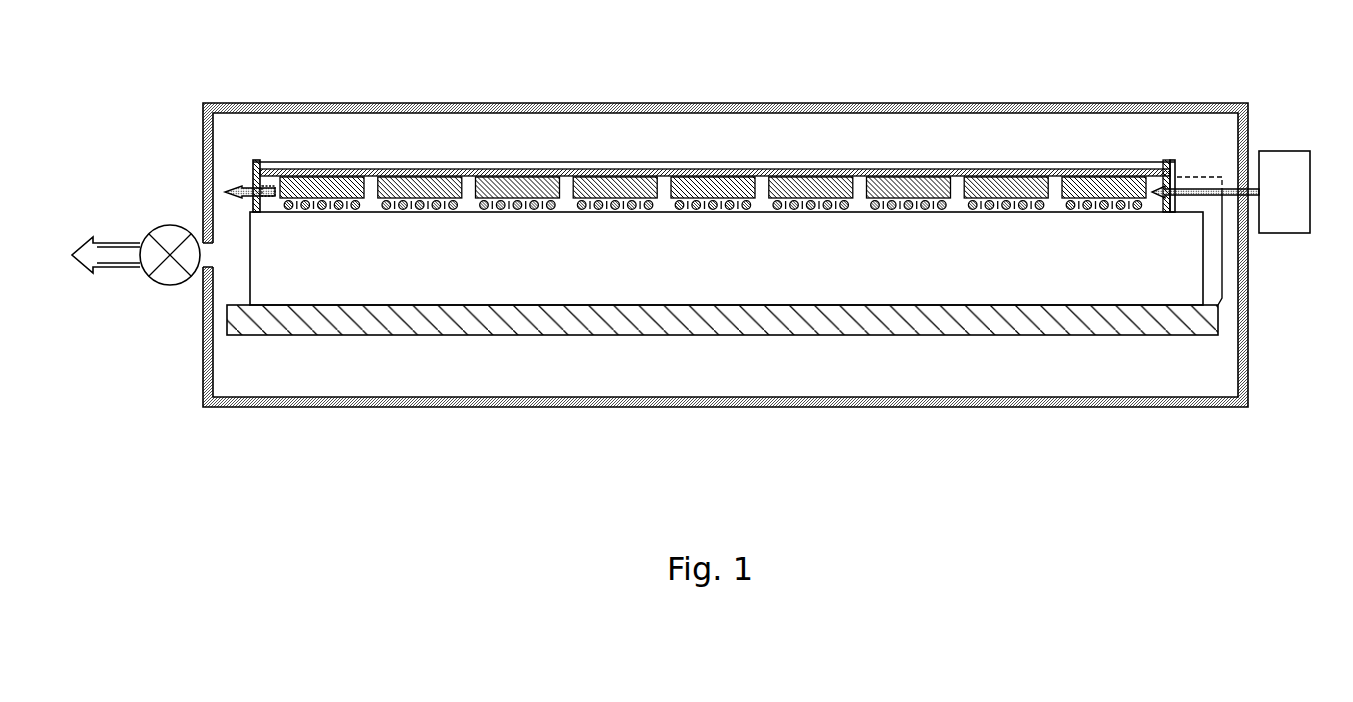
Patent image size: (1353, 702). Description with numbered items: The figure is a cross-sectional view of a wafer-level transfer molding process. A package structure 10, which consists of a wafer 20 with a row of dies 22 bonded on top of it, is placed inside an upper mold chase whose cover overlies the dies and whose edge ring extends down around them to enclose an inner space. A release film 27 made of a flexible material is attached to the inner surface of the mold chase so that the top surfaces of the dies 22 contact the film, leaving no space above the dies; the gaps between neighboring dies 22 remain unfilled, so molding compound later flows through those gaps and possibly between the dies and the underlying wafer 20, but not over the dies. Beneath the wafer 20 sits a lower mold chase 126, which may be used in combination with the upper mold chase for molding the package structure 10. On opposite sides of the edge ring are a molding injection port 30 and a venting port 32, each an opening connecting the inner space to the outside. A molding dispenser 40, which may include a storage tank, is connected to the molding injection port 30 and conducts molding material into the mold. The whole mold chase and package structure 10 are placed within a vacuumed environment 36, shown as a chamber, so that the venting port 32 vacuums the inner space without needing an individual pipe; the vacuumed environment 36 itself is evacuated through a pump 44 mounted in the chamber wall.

The package structure 10 is at (1222, 234).
The wafer 20 is at (700, 278).
The dies 22 is at (533, 178).
The release film 27 is at (1120, 163).
The molding injection port 30 is at (1182, 167).
The venting port 32 is at (258, 190).
The vacuumed environment 36 is at (1248, 358).
The molding dispenser 40 is at (1300, 206).
The pump 44 is at (158, 285).
The lower mold chase 126 is at (858, 323).